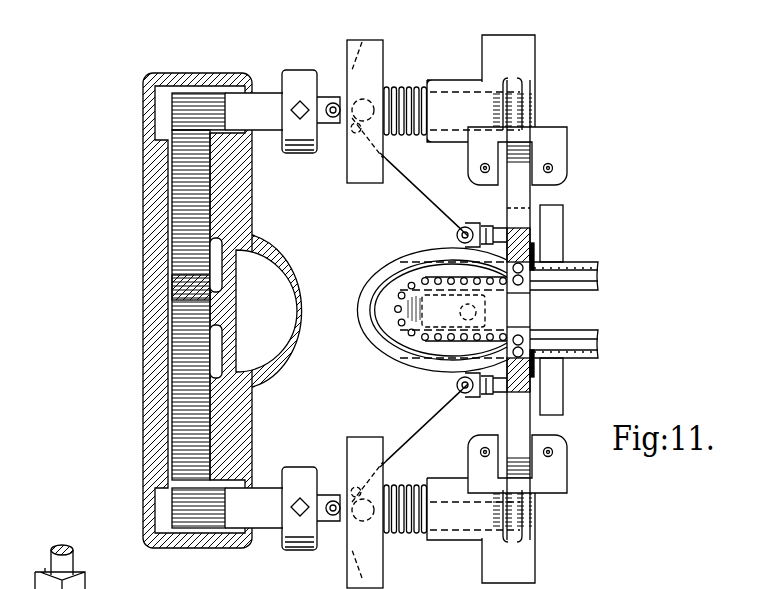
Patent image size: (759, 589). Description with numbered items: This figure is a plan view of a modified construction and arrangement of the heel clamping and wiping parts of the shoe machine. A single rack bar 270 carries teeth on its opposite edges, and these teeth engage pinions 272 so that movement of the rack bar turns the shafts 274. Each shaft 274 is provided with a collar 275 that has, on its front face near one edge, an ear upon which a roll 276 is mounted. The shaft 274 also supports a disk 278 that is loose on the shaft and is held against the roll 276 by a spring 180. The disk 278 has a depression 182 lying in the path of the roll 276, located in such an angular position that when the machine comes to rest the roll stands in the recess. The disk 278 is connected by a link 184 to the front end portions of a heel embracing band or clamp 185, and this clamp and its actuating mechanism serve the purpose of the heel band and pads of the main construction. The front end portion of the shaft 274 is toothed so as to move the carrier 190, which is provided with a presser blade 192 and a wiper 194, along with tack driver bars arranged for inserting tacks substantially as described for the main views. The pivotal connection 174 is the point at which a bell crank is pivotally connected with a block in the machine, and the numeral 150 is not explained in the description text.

The chain 150 is at (528, 347).
The pivotal connection 174 is at (173, 510).
The spring 180 is at (412, 87).
The depression 182 is at (355, 62).
The link 184 is at (423, 195).
The heel embracing band or clamp 185 is at (372, 282).
The carrier 190 is at (517, 170).
The presser blade 192 is at (557, 215).
The wiper 194 is at (522, 222).
The rack bar 270 is at (180, 298).
The pinion 272 is at (173, 183).
The shaft 274 is at (178, 108).
The collar 275 is at (300, 77).
The roll 276 is at (331, 94).
The disk 278 is at (381, 46).